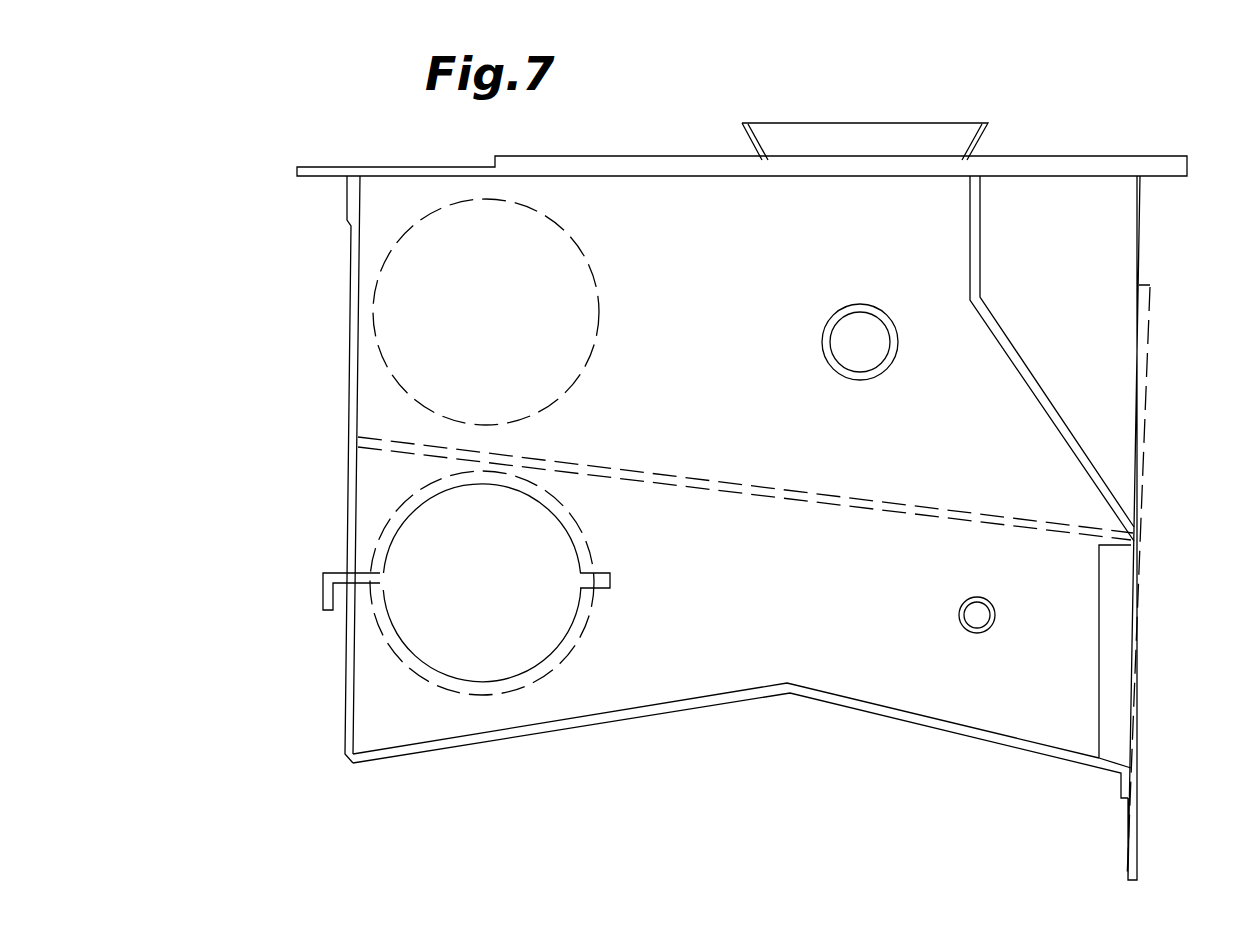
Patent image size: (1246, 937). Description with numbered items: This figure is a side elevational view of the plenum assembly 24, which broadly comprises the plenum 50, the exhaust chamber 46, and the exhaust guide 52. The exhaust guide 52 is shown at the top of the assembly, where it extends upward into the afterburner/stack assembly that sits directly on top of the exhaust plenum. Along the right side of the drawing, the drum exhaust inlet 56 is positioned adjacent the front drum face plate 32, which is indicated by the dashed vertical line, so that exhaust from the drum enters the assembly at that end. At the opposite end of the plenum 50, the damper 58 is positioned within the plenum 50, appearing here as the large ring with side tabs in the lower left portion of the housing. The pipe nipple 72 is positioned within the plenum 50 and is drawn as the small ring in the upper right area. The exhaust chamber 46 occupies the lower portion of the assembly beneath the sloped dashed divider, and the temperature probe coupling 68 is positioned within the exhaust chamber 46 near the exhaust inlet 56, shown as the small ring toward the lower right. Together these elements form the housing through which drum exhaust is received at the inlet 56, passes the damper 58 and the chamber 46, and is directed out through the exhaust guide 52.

The plenum assembly 24 is at (176, 390).
The front drum face plate 32 is at (1140, 416).
The exhaust chamber 46 is at (592, 700).
The plenum 50 is at (385, 418).
The exhaust guide 52 is at (831, 138).
The drum exhaust inlet 56 is at (1115, 692).
The damper 58 is at (420, 558).
The temperature probe coupling 68 is at (997, 607).
The pipe nipple 72 is at (880, 338).